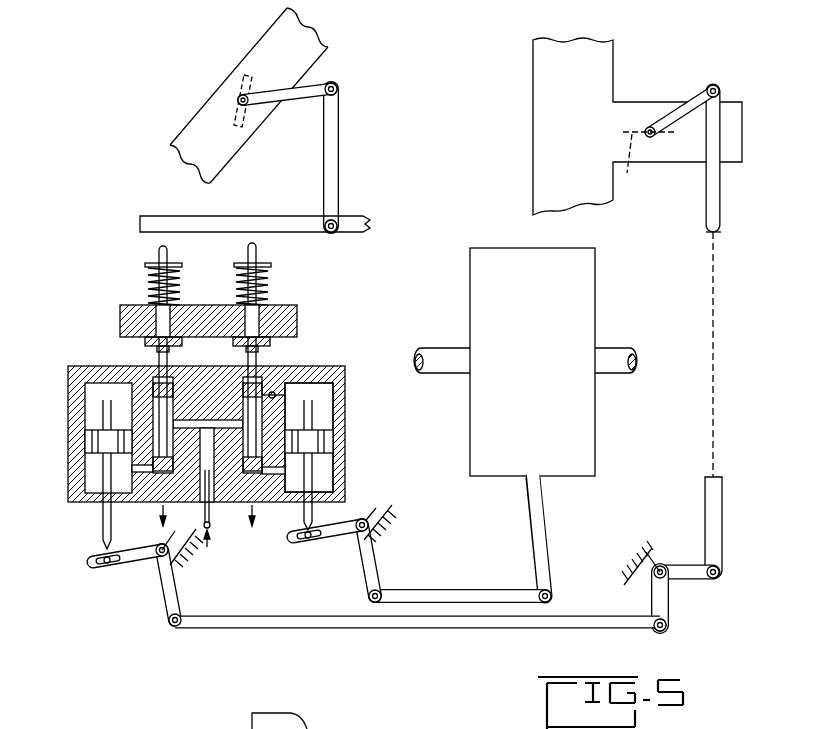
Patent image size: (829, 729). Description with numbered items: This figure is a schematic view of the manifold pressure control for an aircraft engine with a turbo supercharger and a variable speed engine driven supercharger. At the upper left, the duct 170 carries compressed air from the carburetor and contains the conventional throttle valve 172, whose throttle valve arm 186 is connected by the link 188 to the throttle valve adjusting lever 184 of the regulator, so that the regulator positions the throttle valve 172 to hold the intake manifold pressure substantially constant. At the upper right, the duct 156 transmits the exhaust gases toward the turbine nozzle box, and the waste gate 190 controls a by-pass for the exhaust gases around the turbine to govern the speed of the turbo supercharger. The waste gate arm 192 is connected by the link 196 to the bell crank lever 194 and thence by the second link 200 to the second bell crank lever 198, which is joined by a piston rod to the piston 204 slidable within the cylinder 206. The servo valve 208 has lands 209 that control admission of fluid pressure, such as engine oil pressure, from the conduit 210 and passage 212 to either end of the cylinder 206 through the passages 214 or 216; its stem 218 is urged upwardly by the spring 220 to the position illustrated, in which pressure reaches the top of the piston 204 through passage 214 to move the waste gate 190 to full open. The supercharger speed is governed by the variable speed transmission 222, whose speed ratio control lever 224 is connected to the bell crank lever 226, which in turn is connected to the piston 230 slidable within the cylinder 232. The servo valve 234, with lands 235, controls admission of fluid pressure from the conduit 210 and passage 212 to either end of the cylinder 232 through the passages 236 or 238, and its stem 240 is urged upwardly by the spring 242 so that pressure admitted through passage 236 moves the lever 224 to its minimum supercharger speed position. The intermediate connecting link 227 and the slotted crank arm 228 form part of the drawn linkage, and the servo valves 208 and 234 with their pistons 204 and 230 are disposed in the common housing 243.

The duct 156 is at (541, 88).
The duct 170 is at (198, 125).
The throttle valve 172 is at (242, 86).
The throttle valve adjusting lever 184 is at (222, 219).
The throttle valve arm 186 is at (308, 96).
The link 188 is at (337, 133).
The waste gate 190 is at (624, 176).
The waste gate arm 192 is at (678, 108).
The bell crank lever 194 is at (665, 603).
The link 196 is at (714, 197).
The second bell crank lever 198 is at (168, 592).
The second link 200 is at (296, 617).
The piston 204 is at (68, 445).
The cylinder 206 is at (85, 406).
The servo valve 208 is at (132, 413).
The lands 209 is at (178, 386).
The conduit 210 is at (211, 526).
The passage 212 is at (193, 476).
The passage 214 is at (152, 392).
The passage 216 is at (139, 507).
The stem 218 is at (140, 311).
The spring 220 is at (150, 280).
The variable speed transmission 222 is at (516, 254).
The speed ratio control lever 224 is at (543, 511).
The bell crank lever 226 is at (364, 567).
The connecting rod 227 is at (502, 596).
The bell crank arm 228 is at (316, 518).
The piston 230 is at (334, 446).
The cylinder 232 is at (345, 406).
The servo valve 234 is at (328, 402).
The lands 235 is at (275, 393).
The passage 236 is at (264, 410).
The passage 238 is at (264, 510).
The stem 240 is at (268, 311).
The spring 242 is at (268, 280).
The common housing 243 is at (346, 422).